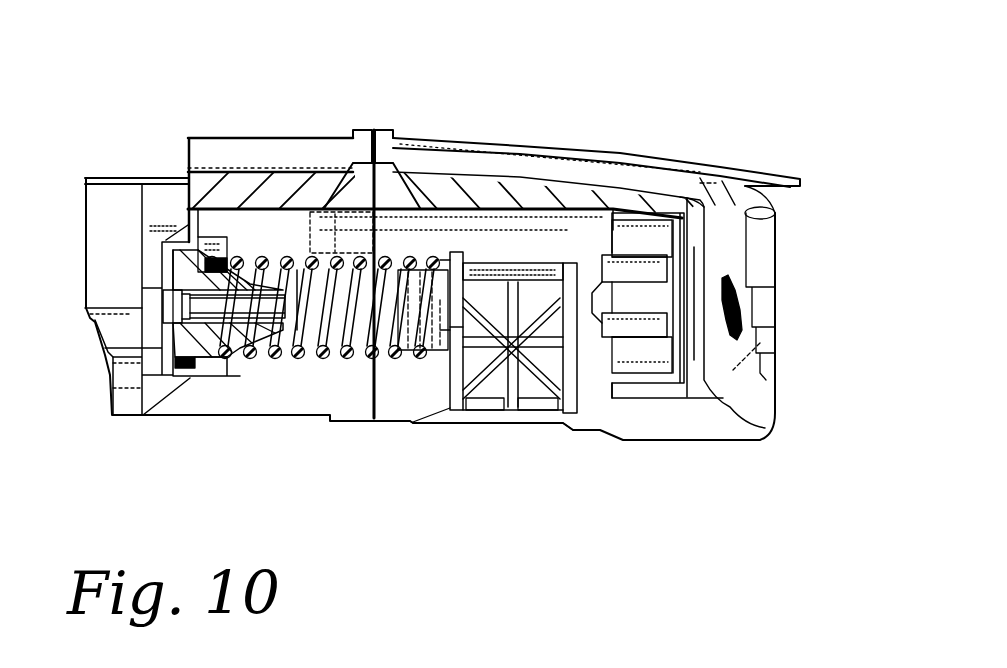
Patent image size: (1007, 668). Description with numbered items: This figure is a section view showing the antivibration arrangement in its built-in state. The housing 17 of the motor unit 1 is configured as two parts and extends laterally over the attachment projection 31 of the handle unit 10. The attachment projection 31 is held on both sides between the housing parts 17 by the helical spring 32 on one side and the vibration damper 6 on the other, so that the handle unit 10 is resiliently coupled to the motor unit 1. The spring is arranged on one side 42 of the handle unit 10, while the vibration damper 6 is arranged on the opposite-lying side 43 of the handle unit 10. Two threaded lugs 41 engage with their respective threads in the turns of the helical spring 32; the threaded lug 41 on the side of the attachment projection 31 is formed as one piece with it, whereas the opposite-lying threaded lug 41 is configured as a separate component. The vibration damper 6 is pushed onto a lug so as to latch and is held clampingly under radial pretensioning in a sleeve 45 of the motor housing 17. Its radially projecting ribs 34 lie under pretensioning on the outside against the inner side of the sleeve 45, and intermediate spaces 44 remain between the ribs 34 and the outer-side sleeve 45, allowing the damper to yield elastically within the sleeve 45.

The motor unit 1 is at (698, 130).
The vibration damper 6 is at (590, 324).
The handle unit 10 is at (466, 450).
The housing 17 is at (245, 185).
The attachment projection 31 is at (512, 355).
The helical spring 32 is at (325, 362).
The radially projecting ribs 34 is at (652, 270).
The threaded lug 41 is at (235, 345).
The side of the handle unit 42 is at (430, 254).
The opposite-lying side of the handle unit 43 is at (597, 278).
The intermediate spaces 44 is at (666, 250).
The sleeve 45 is at (640, 388).